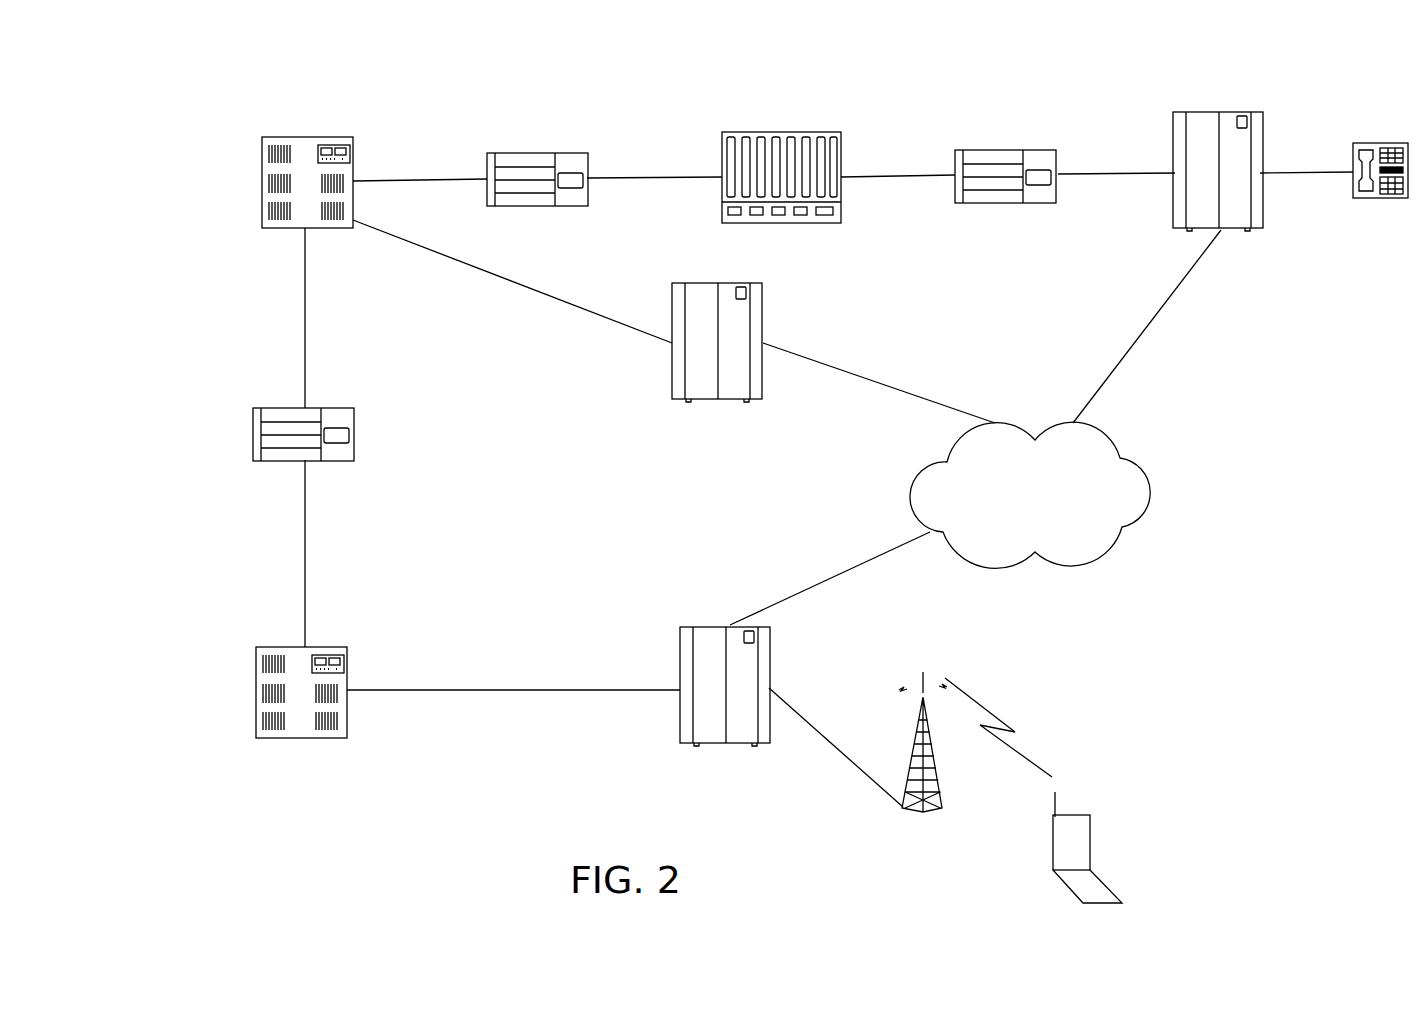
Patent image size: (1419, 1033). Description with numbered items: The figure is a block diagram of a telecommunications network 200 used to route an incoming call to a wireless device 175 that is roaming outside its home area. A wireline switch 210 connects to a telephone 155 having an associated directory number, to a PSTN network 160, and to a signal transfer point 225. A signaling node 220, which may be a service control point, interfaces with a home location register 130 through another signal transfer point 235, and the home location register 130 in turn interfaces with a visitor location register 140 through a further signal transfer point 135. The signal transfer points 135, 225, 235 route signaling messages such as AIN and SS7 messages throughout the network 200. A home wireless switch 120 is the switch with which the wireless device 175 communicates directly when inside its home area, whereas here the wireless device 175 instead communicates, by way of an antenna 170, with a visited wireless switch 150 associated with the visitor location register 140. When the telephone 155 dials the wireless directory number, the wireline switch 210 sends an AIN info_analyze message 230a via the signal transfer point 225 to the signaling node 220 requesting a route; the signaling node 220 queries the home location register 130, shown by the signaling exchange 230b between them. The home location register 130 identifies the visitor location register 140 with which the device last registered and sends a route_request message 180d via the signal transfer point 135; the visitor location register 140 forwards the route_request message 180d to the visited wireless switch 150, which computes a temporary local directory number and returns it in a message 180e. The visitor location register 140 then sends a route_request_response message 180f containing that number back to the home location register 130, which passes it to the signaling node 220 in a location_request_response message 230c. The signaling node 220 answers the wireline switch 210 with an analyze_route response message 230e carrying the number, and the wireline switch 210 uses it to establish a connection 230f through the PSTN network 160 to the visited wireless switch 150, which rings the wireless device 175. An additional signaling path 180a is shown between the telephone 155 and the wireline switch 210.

The telecommunications network 200 is at (1243, 399).
The home wireless switch 120 is at (763, 291).
The home location register 130 is at (262, 173).
The signal transfer point 135 is at (253, 431).
The visitor location register 140 is at (256, 693).
The visited wireless switch 150 is at (707, 627).
The telephone 155 is at (1377, 199).
The PSTN network 160 is at (1080, 565).
The antenna 170 is at (910, 812).
The wireless device 175 is at (1100, 907).
The wireline switch 210 is at (1230, 229).
The signaling node 220 is at (773, 223).
The signal transfer point 225 is at (990, 203).
The signal transfer point 235 is at (535, 206).
The call setup message 180a is at (1290, 153).
The route_request message 180d is at (287, 255).
The IS-41 message 180e is at (455, 662).
The route_request_response message 180f is at (323, 362).
The info_analyze message 230a is at (935, 158).
The signaling message 230b is at (390, 163).
The location_request_response message 230c is at (378, 200).
The analyze_route response message 230e is at (920, 195).
The connection 230f is at (1145, 290).